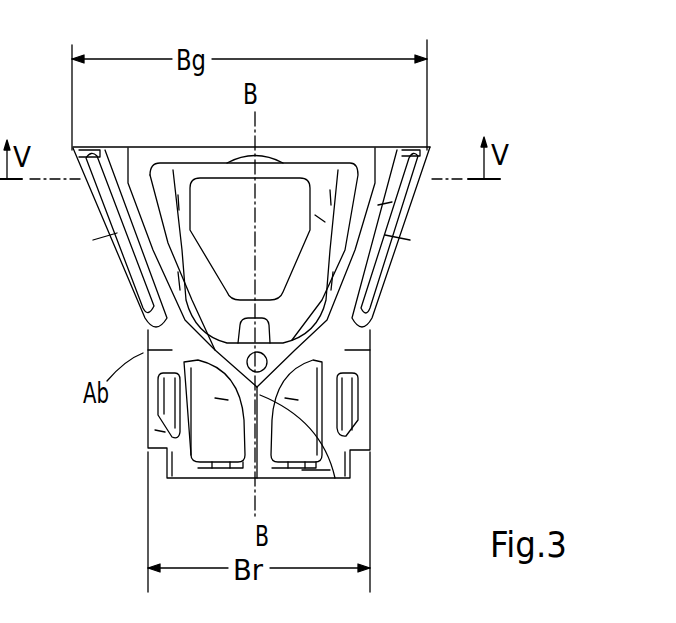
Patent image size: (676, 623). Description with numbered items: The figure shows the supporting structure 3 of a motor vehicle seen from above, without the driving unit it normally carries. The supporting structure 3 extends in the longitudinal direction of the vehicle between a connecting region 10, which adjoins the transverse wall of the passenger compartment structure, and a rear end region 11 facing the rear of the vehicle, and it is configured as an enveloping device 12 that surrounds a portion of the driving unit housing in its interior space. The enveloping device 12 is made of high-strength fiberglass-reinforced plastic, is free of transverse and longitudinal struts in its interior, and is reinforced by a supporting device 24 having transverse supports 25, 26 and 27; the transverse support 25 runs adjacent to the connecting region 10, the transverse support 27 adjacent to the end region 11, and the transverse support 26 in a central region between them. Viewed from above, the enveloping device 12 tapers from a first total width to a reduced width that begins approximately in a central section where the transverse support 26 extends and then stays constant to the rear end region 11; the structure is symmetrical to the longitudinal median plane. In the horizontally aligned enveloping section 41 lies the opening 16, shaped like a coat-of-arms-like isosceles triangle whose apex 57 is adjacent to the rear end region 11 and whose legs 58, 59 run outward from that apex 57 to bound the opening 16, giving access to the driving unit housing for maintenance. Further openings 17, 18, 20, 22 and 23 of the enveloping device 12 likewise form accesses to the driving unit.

The supporting structure 3 is at (373, 399).
The connecting region 10 is at (102, 147).
The rear end region 11 is at (177, 480).
The enveloping device 12 is at (104, 236).
The opening 16 is at (250, 239).
The opening 17 is at (207, 447).
The opening 18 is at (173, 412).
The opening 20 is at (355, 427).
The opening 22 is at (205, 192).
The opening 23 is at (312, 482).
The supporting device 24 is at (182, 306).
The transverse support 25 is at (148, 147).
The transverse support 26 is at (342, 343).
The transverse support 27 is at (277, 463).
The horizontally aligned enveloping section 41 is at (313, 155).
The apex 57 is at (333, 477).
The leg 58 is at (145, 291).
The leg 59 is at (356, 286).